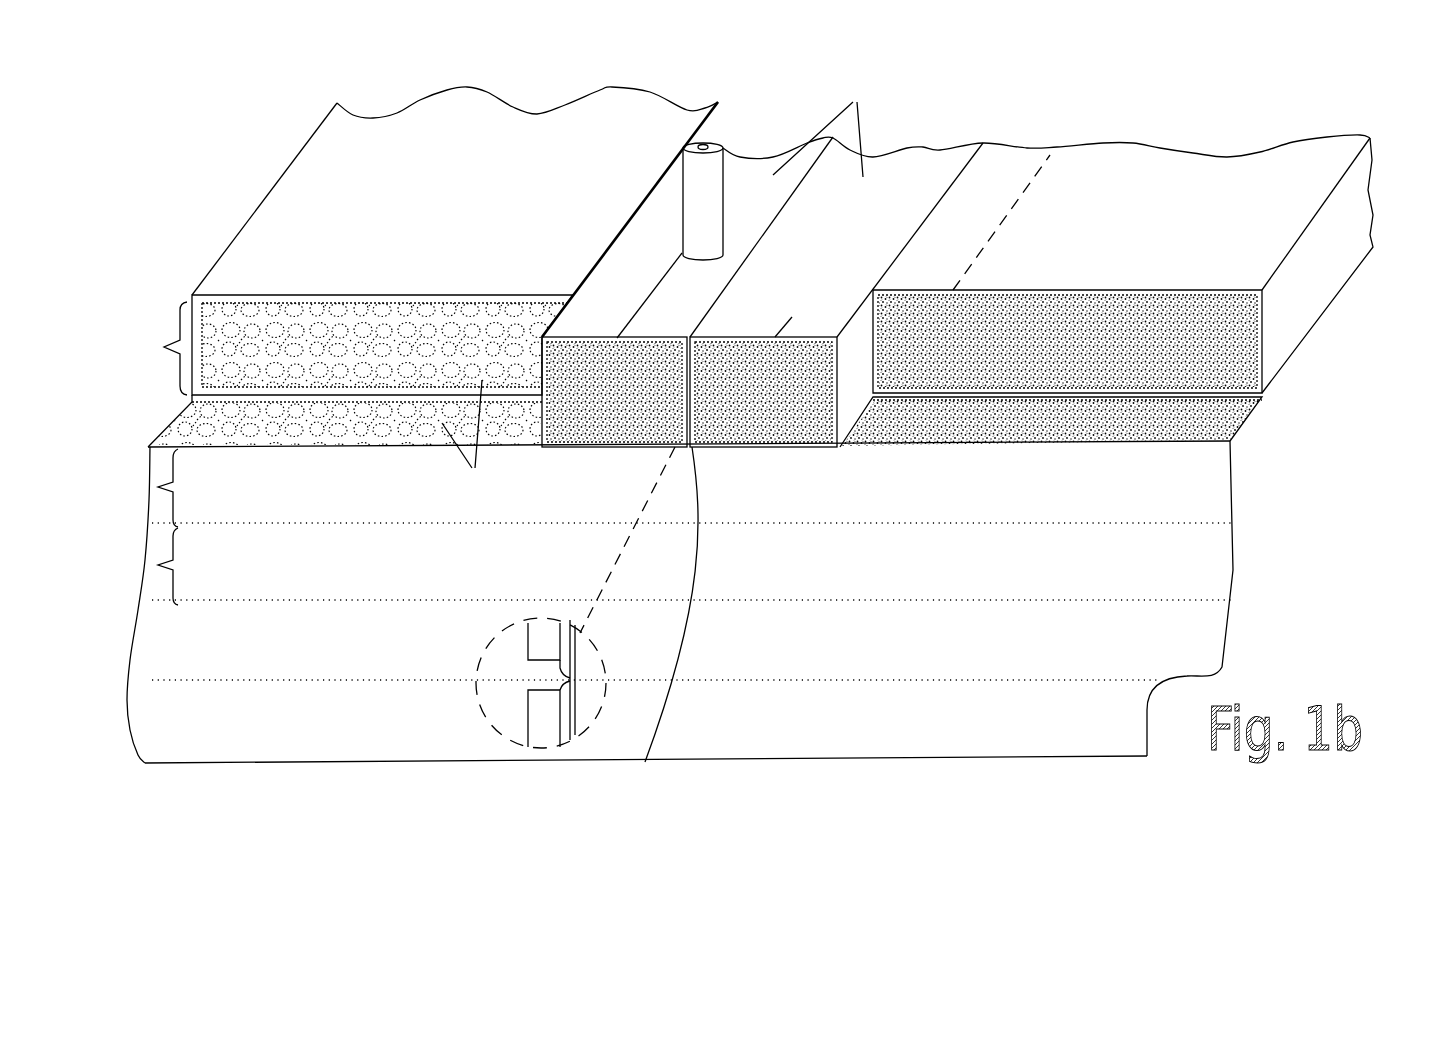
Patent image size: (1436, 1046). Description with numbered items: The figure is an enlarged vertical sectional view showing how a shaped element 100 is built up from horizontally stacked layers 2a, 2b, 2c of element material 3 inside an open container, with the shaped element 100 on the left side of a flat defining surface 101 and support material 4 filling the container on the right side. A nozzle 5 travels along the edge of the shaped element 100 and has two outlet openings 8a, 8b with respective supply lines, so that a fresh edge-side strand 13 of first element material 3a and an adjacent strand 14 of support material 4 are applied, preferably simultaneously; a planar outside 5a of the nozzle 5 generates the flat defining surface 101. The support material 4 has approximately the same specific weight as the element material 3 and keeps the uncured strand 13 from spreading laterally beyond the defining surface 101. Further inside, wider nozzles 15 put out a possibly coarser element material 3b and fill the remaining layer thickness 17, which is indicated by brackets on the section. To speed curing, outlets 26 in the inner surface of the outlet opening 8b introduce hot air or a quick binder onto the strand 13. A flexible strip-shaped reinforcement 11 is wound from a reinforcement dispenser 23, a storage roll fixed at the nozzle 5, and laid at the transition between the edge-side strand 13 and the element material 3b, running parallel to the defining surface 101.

The reinforcement dispenser 23 is at (713, 142).
The nozzle 5 is at (1046, 206).
The nozzle 15 is at (760, 267).
The reinforcement 11 is at (630, 219).
The layer thickness 17 is at (149, 453).
The outlet opening 8a is at (650, 337).
The planar outside 5a is at (700, 345).
The outlet opening 8b is at (799, 314).
The strand 13 is at (614, 392).
The strand 14 is at (763, 392).
The support material 4 is at (768, 440).
The element material 3b is at (471, 438).
The element material 3a is at (633, 427).
The layer 2c is at (692, 500).
The layer 2b is at (692, 565).
The layer 2a is at (656, 648).
The element material 3 is at (474, 583).
The shaped element 100 is at (680, 602).
The defining surface 101 is at (682, 662).
The outlets 26 is at (535, 677).